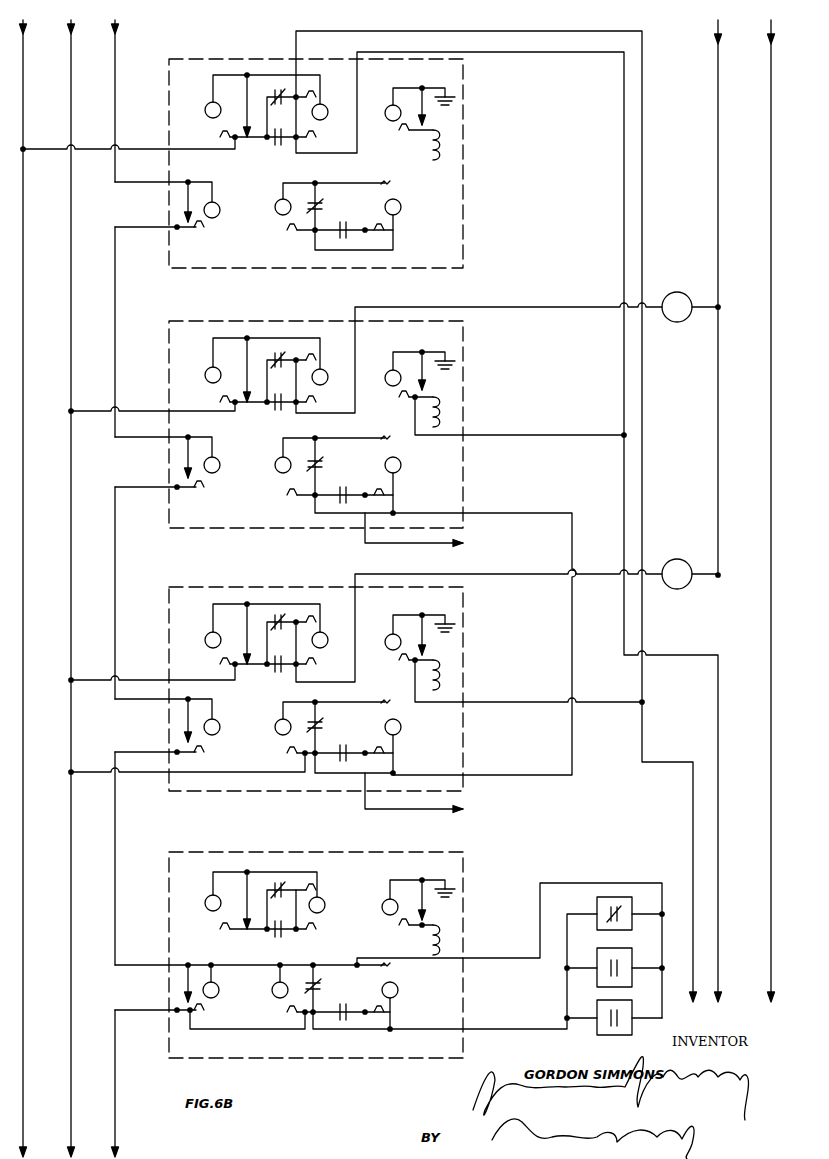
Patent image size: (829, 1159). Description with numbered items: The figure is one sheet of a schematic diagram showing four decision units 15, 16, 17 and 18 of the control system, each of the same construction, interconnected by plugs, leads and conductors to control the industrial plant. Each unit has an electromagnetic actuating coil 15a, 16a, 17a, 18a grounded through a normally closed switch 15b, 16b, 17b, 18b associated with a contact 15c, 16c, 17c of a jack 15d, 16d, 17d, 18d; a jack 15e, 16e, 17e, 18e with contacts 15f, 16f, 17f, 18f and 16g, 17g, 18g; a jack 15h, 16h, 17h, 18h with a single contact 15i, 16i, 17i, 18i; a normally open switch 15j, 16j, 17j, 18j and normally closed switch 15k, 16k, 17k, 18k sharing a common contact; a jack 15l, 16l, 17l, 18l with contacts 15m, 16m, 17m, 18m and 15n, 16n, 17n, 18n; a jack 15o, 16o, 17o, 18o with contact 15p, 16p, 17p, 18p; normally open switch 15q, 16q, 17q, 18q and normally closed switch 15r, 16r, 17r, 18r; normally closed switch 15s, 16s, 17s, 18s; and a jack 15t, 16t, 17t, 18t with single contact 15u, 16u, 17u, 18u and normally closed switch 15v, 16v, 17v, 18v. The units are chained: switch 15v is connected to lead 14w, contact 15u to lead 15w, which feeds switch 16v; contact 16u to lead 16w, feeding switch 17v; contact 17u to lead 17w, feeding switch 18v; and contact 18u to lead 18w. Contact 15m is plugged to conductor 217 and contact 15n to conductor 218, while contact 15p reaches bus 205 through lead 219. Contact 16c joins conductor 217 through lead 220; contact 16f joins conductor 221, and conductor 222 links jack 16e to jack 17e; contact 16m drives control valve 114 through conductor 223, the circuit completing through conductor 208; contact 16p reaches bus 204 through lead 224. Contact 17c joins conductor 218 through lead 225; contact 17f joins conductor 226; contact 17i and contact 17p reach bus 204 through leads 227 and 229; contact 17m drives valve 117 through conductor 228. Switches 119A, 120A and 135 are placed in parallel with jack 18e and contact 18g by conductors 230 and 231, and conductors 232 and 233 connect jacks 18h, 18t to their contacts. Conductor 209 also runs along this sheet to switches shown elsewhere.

The bus 205 is at (27, 63).
The bus 204 is at (75, 63).
The lead 14w is at (115, 70).
The lead 15w is at (115, 306).
The lead 16w is at (115, 571).
The lead 17w is at (115, 834).
The lead 18w is at (115, 1073).
The conductor 208 is at (717, 87).
The conductor 209 is at (770, 87).
The conductor 217 is at (316, 160).
The conductor 218 is at (298, 42).
The lead 219 is at (142, 149).
The lead 220 is at (512, 435).
The conductor 221 is at (389, 550).
The conductor 222 is at (510, 513).
The conductor 223 is at (314, 420).
The lead 224 is at (142, 411).
The lead 225 is at (508, 702).
The conductor 226 is at (417, 823).
The lead 227 is at (144, 775).
The conductor 228 is at (320, 688).
The lead 229 is at (142, 680).
The conductor 230 is at (497, 1029).
The conductor 231 is at (497, 958).
The conductor 232 is at (240, 965).
The conductor 233 is at (227, 1040).
The control valve 114 is at (677, 307).
The valve 117 is at (677, 574).
The switch 135 is at (597, 908).
The switch 119A is at (597, 952).
The switch 120A is at (597, 1035).
The decision unit 15 is at (237, 59).
The electromagnetic actuating coil 15a is at (429, 153).
The normally closed switch 15b is at (422, 106).
The contact 15c is at (416, 127).
The jack 15d is at (390, 107).
The jack 15e is at (401, 207).
The contact 15f is at (379, 227).
The jack 15h is at (277, 207).
The contact 15i is at (340, 228).
The normally open switch 15j is at (343, 230).
The normally closed switch 15k is at (315, 206).
The jack 15l is at (313, 115).
The contact 15m is at (318, 136).
The contact 15n is at (314, 96).
The jack 15o is at (206, 107).
The contact 15p is at (220, 137).
The normally open switch 15q is at (278, 144).
The normally closed switch 15r is at (278, 87).
The normally closed switch 15s is at (246, 91).
The jack 15t is at (214, 218).
The contact 15u is at (201, 234).
The normally closed switch 15v is at (188, 205).
The decision unit 16 is at (244, 321).
The electromagnetic actuating coil 16a is at (436, 412).
The normally closed switch 16b is at (426, 379).
The contact 16c is at (402, 400).
The jack 16d is at (390, 371).
The jack 16e is at (401, 465).
The contact 16f is at (378, 493).
The contact 16g is at (383, 444).
The jack 16h is at (278, 462).
The contact 16i is at (340, 493).
The normally open switch 16j is at (343, 495).
The normally closed switch 16k is at (315, 466).
The jack 16l is at (323, 372).
The contact 16m is at (323, 401).
The contact 16n is at (306, 357).
The jack 16o is at (207, 362).
The contact 16p is at (218, 402).
The normally open switch 16q is at (278, 409).
The normally closed switch 16r is at (280, 351).
The normally closed switch 16s is at (244, 365).
The jack 16t is at (220, 469).
The contact 16u is at (201, 491).
The normally closed switch 16v is at (188, 466).
The decision unit 17 is at (240, 587).
The electromagnetic actuating coil 17a is at (446, 675).
The normally closed switch 17b is at (424, 646).
The contact 17c is at (404, 666).
The jack 17d is at (386, 637).
The jack 17e is at (401, 727).
The contact 17f is at (377, 751).
The contact 17g is at (385, 703).
The jack 17h is at (278, 725).
The contact 17i is at (290, 759).
The normally open switch 17j is at (344, 766).
The normally closed switch 17k is at (322, 727).
The jack 17l is at (326, 643).
The contact 17m is at (311, 670).
The contact 17n is at (306, 619).
The jack 17o is at (207, 630).
The contact 17p is at (218, 671).
The normally open switch 17q is at (280, 673).
The normally closed switch 17r is at (281, 614).
The normally closed switch 17s is at (244, 634).
The jack 17t is at (217, 730).
The contact 17u is at (203, 757).
The normally closed switch 17v is at (188, 732).
The decision unit 18 is at (240, 852).
The electromagnetic actuating coil 18a is at (428, 940).
The normally closed switch 18b is at (423, 908).
The jack 18d is at (381, 901).
The jack 18e is at (398, 992).
The contact 18f is at (376, 1007).
The contact 18g is at (380, 965).
The jack 18h is at (277, 988).
The contact 18i is at (289, 1013).
The normally open switch 18j is at (344, 1025).
The normally closed switch 18k is at (320, 989).
The jack 18l is at (286, 892).
The contact 18m is at (306, 926).
The contact 18n is at (306, 887).
The jack 18o is at (227, 890).
The contact 18p is at (258, 926).
The normally open switch 18q is at (286, 929).
The normally closed switch 18r is at (280, 906).
The normally closed switch 18s is at (247, 900).
The jack 18t is at (219, 992).
The contact 18u is at (203, 1012).
The normally closed switch 18v is at (188, 989).